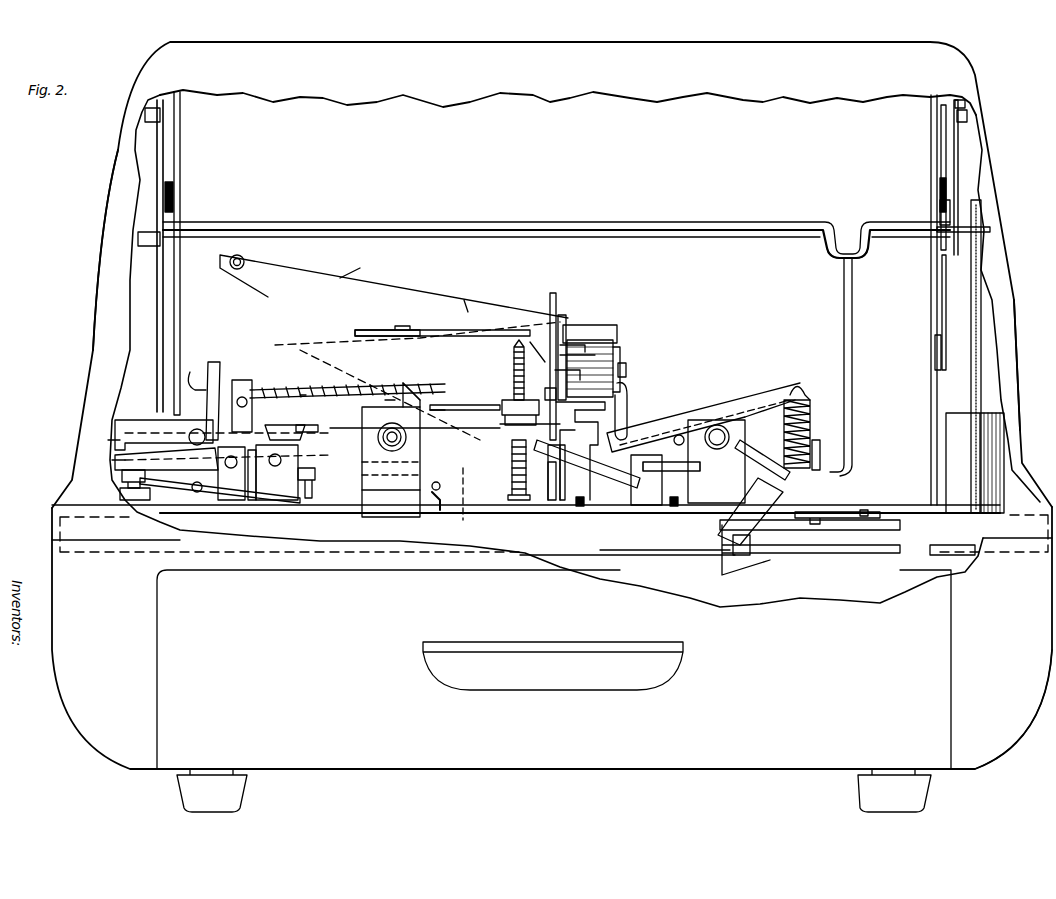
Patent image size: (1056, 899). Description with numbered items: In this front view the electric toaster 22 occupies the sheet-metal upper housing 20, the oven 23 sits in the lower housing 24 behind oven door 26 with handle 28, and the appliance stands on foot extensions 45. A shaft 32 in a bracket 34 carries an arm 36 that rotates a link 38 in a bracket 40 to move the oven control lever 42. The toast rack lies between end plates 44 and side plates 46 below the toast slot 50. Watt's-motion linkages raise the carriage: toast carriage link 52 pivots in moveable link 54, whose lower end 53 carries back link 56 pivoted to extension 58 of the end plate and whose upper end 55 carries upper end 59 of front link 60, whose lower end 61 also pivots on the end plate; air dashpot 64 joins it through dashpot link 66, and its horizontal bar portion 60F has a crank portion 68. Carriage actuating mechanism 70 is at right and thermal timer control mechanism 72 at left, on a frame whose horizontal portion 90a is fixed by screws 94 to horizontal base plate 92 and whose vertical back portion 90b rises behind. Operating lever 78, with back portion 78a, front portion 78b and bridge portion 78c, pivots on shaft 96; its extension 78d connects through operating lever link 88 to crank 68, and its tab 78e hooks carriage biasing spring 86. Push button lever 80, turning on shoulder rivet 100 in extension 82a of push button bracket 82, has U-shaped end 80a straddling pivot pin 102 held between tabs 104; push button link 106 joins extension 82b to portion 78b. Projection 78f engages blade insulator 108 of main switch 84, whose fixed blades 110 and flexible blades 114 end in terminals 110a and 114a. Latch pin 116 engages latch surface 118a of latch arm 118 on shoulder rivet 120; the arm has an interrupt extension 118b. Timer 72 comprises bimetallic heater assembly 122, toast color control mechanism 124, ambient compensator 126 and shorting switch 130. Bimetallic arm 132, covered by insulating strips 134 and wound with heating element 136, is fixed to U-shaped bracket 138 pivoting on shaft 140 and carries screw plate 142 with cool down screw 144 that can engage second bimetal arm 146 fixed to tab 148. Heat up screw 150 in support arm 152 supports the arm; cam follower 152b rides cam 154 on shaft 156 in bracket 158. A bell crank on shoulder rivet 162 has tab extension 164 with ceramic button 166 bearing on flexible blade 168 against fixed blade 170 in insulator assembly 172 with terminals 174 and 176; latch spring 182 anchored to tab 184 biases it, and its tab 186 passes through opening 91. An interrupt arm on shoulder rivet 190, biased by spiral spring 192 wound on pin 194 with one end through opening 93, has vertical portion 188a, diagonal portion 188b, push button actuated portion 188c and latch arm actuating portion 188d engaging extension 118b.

The upper housing 20 is at (112, 187).
The electric toaster 22 is at (141, 156).
The oven 23 is at (714, 591).
The lower housing 24 is at (1005, 748).
The oven door 26 is at (390, 762).
The handle 28 is at (551, 645).
The shaft 32 is at (717, 425).
The bracket 34 is at (735, 420).
The arm 36 is at (757, 450).
The link 38 is at (597, 470).
The bracket 40 is at (631, 494).
The oven control lever 42 is at (563, 492).
The end plates 44 is at (180, 145).
The foot extensions 45 is at (237, 790).
The side plates 46 is at (497, 105).
The toast slot 50 is at (927, 47).
The toast carriage link 52 is at (176, 205).
The lower end of link 54 53 is at (992, 230).
The moveable link 54 is at (963, 152).
The upper end of link 54 55 is at (963, 102).
The back link 56 is at (942, 303).
The extension 58 is at (935, 368).
The upper end of front link 59 is at (968, 118).
The front link 60 is at (941, 135).
The horizontal bar portion 60F is at (658, 230).
The lower end of front link 61 is at (940, 218).
The air dashpot 64 is at (992, 437).
The dashpot link 66 is at (983, 268).
The crank portion 68 is at (835, 253).
The carriage actuating mechanism 70 is at (727, 350).
The thermal timer control mechanism 72 is at (230, 317).
The operating lever 78 is at (340, 285).
The back portion 78a is at (780, 392).
The front portion 78b is at (594, 463).
The bridge portion 78c is at (680, 392).
The extension 78d is at (822, 470).
The tab portion 78e is at (808, 386).
The projection 78f is at (728, 533).
The push button lever 80 is at (550, 300).
The end portion 80a is at (549, 395).
The push button bracket 82 is at (592, 340).
The extension 82a is at (567, 335).
The extension 82b is at (621, 357).
The main electrical switch 84 is at (861, 568).
The carriage biasing spring 86 is at (812, 420).
The operating lever link 88 is at (852, 315).
The horizontal portion 90a is at (636, 505).
The vertical back portion 90b is at (612, 325).
The opening 91 is at (312, 432).
The horizontal base plate 92 is at (868, 513).
The opening 93 is at (432, 490).
The screws 94 is at (580, 506).
The pivot pin 96 is at (674, 440).
The shoulder rivet 100 is at (560, 370).
The pivot pin 102 is at (556, 383).
The tabs 104 is at (545, 362).
The push button link 106 is at (628, 395).
The blade insulator 108 is at (742, 556).
The fixed blades 110 is at (845, 512).
The back portions 110a is at (870, 508).
The flexible blades 114 is at (776, 553).
The back portions 114a is at (975, 555).
The latch pin 116 is at (229, 262).
The latch arm 118 is at (214, 362).
The latch surface 118a is at (206, 372).
The interrupt extension 118b is at (126, 420).
The shoulder rivet 120 is at (190, 432).
The bimetallic heater assembly 122 is at (323, 372).
The toast color control mechanism 124 is at (428, 386).
The ambient compensator 126 is at (480, 280).
The shorting switch 130 is at (95, 502).
The bimetallic arm 132 is at (440, 406).
The insulating strips 134 is at (452, 416).
The heating element 136 is at (300, 396).
The U-shaped bracket 138 is at (243, 380).
The shaft 140 is at (248, 402).
The screw plate 142 is at (503, 410).
The cool down screw 144 is at (513, 366).
The bimetal arm 146 is at (508, 330).
The tab 148 is at (377, 330).
The heat up screw 150 is at (512, 468).
The support arm 152 is at (496, 452).
The cam follower 152b is at (405, 385).
The cam 154 is at (384, 401).
The shaft 156 is at (406, 440).
The bracket 158 is at (388, 500).
The shoulder rivet 162 is at (192, 492).
The tab extension 164 is at (122, 475).
The ceramic button 166 is at (120, 484).
The flexible blade 168 is at (115, 460).
The fixed blade 170 is at (172, 490).
The insulator assembly 172 is at (292, 536).
The terminal 174 is at (250, 490).
The terminal 176 is at (232, 475).
The latch spring 182 is at (312, 498).
The tab 184 is at (420, 462).
The tab 186 is at (283, 435).
The vertical portion 188a is at (548, 470).
The diagonal portion 188b is at (578, 420).
The push button actuated portion 188c is at (575, 406).
The latch arm actuating portion 188d is at (110, 443).
The shoulder rivet 190 is at (200, 448).
The spiral spring 192 is at (465, 501).
The pin 194 is at (438, 502).